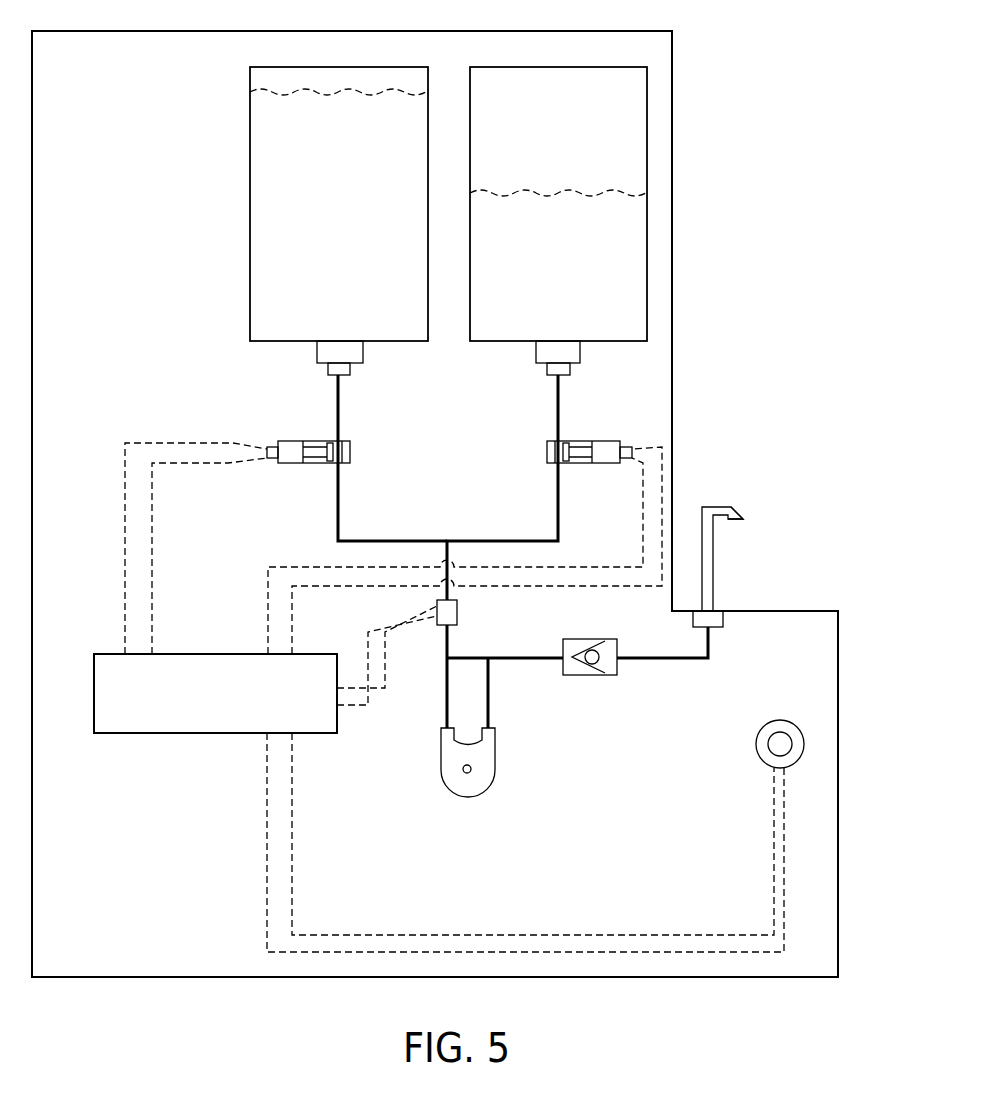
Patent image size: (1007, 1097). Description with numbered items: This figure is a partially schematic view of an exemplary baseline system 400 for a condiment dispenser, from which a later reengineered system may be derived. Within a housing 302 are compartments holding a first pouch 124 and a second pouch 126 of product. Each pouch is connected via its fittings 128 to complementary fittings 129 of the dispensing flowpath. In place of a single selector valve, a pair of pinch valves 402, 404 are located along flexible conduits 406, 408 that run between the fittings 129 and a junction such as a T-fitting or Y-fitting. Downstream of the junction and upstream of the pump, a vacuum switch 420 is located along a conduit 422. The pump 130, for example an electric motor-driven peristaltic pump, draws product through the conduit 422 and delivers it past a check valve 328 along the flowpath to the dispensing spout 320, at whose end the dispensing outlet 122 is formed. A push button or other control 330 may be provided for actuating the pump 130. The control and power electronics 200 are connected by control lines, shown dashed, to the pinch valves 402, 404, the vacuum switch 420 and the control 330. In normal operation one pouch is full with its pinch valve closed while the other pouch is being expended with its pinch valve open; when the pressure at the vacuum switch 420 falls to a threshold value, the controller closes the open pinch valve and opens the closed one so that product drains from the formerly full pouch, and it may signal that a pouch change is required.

The baseline system 400 is at (762, 50).
The housing 302 is at (672, 115).
The second pouch 126 is at (233, 291).
The first pouch 124 is at (658, 268).
The fittings 128 is at (330, 350).
The complementary fittings 129 is at (322, 366).
The pinch valve 404 is at (282, 432).
The pinch valve 402 is at (612, 429).
The flexible conduit 408 is at (340, 512).
The flexible conduit 406 is at (556, 512).
The vacuum switch 420 is at (462, 612).
The conduit 422 is at (450, 670).
The check valve 328 is at (590, 689).
The dispensing spout 320 is at (725, 490).
The dispensing outlet 122 is at (759, 530).
The control 330 is at (813, 727).
The pump 130 is at (513, 776).
The control and power electronics 200 is at (233, 711).